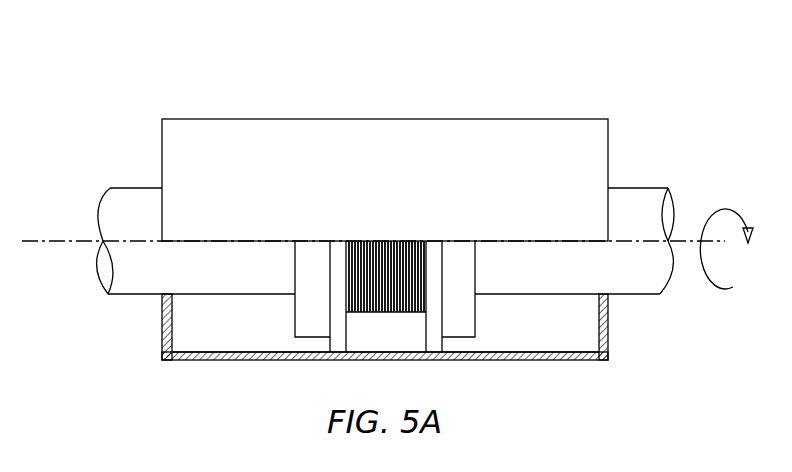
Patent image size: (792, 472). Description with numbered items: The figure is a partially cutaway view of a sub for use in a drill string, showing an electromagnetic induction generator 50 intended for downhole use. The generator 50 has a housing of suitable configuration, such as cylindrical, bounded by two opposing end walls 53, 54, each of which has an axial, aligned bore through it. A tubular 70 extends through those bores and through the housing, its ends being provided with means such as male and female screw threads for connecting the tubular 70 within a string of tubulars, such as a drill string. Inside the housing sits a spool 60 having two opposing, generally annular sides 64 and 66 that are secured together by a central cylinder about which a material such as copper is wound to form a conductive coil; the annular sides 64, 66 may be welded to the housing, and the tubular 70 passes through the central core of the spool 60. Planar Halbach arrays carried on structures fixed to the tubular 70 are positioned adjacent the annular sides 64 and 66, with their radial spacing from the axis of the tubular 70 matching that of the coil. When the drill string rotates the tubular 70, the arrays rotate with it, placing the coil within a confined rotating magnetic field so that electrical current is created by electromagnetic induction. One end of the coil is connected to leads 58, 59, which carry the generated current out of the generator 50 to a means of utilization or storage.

The electromagnetic induction generator 50 is at (508, 119).
The tubular 70 is at (632, 188).
The lead 58 is at (352, 119).
The lead 59 is at (408, 119).
The end wall 53 is at (162, 327).
The end wall 54 is at (608, 322).
The spool 60 is at (330, 298).
The annular side 64 is at (342, 343).
The annular side 66 is at (432, 343).